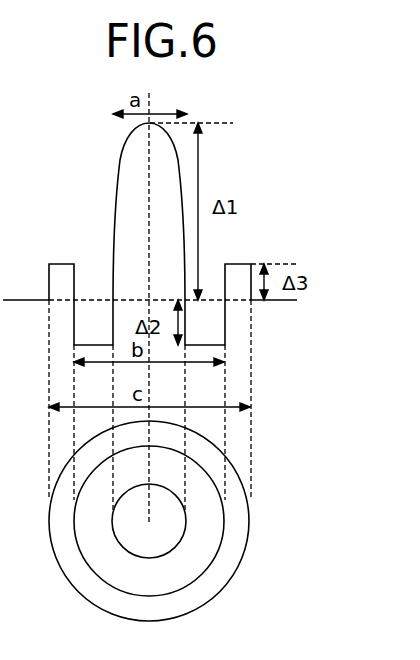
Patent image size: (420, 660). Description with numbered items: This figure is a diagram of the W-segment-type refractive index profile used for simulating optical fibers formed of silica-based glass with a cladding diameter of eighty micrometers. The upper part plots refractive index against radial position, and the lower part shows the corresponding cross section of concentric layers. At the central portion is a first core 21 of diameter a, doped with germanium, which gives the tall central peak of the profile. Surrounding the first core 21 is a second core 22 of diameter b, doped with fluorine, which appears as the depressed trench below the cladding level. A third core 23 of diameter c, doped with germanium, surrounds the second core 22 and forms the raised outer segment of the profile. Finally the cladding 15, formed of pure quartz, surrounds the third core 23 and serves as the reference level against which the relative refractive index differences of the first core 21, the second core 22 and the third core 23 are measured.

The cladding 15 is at (195, 524).
The first core 21 is at (153, 541).
The second core 22 is at (200, 557).
The third core 23 is at (233, 540).